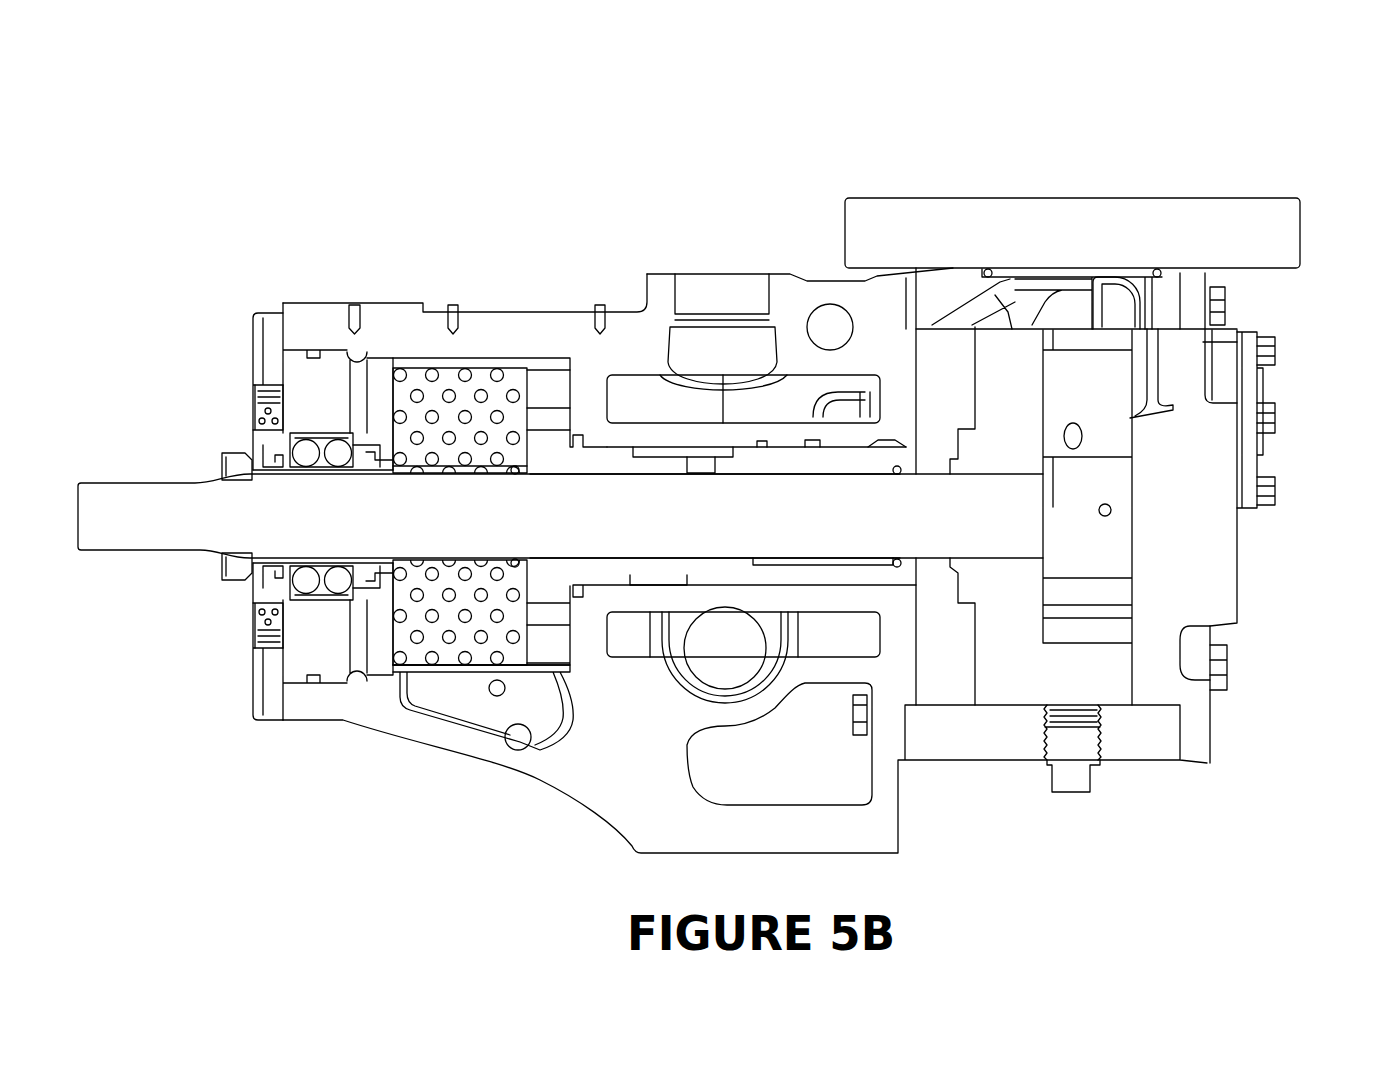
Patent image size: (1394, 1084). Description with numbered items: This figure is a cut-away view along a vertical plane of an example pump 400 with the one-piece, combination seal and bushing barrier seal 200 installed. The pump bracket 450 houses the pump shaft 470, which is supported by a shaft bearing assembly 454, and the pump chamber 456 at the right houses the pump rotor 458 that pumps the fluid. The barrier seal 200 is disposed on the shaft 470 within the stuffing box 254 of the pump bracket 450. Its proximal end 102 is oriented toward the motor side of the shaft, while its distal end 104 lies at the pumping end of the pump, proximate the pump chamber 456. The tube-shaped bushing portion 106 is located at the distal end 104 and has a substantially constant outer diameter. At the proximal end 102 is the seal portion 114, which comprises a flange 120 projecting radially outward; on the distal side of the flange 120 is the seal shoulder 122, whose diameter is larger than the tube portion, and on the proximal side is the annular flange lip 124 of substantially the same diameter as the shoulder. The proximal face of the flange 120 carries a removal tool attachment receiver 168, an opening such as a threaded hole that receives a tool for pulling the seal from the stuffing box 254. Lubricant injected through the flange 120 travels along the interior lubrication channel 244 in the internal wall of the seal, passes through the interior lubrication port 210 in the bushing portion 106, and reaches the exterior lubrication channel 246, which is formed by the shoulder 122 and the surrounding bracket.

The pump 400 is at (178, 106).
The shaft bearing assembly 454 is at (237, 303).
The barrier seal 200 is at (543, 360).
The removal tool attachment receiver 168 is at (537, 422).
The bushing portion 106 is at (870, 437).
The pump rotor 458 is at (1073, 363).
The pump chamber 456 is at (1230, 165).
The distal end 104 is at (1280, 340).
The pump shaft 470 is at (155, 500).
The annular flange lip 124 is at (480, 448).
The seal shoulder 122 is at (680, 435).
The exterior lubrication channel 246 is at (717, 450).
The interior lubrication port 210 is at (700, 462).
The interior lubrication channel 244 is at (660, 556).
The seal portion 114 is at (616, 598).
The stuffing box 254 is at (730, 596).
The proximal end 102 is at (175, 605).
The flange 120 is at (553, 660).
The pump bracket 450 is at (885, 788).